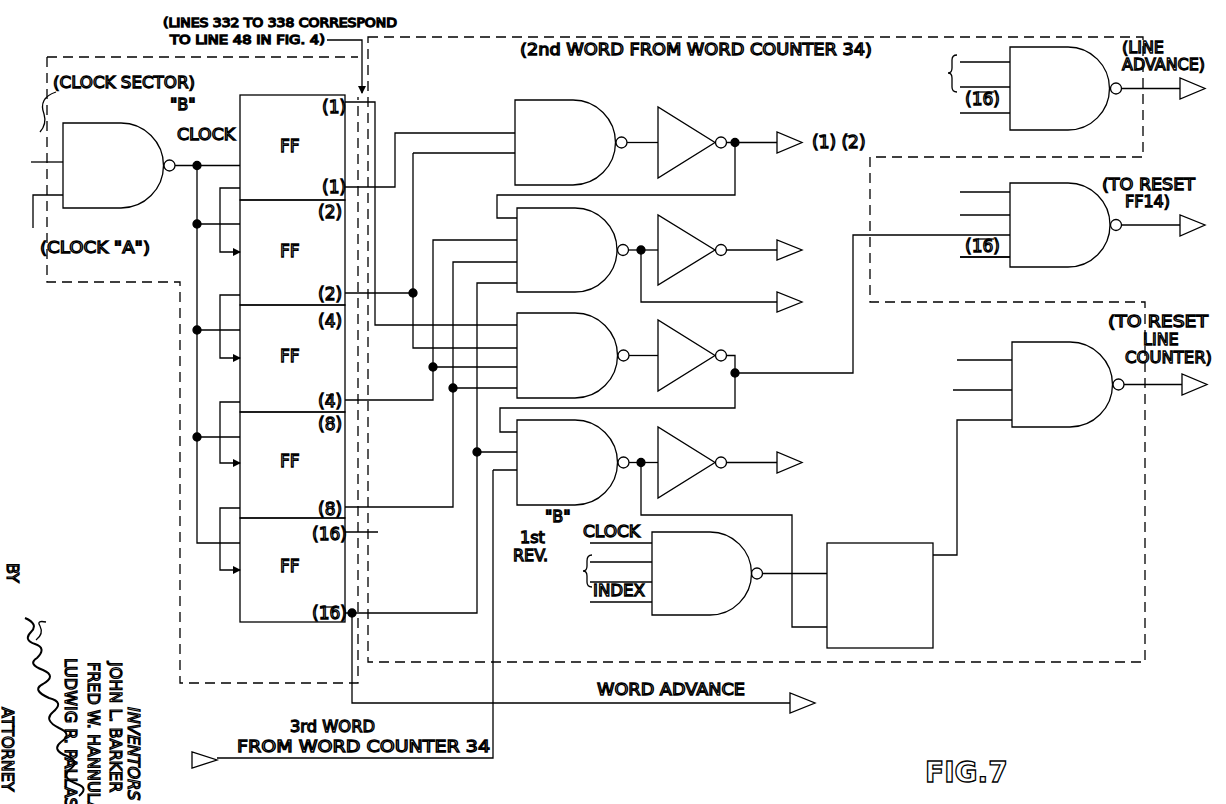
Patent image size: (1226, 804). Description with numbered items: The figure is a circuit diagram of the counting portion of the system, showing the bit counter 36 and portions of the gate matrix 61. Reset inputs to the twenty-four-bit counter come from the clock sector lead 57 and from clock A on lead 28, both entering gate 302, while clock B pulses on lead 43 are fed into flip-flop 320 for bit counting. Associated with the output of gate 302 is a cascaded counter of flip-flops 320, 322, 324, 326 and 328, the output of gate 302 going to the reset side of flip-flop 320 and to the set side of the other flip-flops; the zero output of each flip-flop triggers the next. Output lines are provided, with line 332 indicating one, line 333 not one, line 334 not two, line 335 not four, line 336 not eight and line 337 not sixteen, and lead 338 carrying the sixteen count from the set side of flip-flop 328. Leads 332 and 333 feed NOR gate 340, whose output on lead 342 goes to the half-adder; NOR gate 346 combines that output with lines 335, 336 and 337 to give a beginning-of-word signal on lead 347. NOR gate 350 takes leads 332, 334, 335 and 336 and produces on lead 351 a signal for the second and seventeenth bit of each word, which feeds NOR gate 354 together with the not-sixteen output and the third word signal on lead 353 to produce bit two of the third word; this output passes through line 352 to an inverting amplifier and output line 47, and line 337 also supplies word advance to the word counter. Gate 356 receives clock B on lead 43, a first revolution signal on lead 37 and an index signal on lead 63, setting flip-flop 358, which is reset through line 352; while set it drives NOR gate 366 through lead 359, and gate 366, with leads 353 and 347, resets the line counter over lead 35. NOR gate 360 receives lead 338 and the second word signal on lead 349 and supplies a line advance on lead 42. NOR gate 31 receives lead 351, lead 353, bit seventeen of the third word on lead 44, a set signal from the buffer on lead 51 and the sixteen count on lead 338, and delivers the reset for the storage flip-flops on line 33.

The bit counter 36 is at (162, 61).
The gate matrix 61 is at (455, 42).
The clock sector lead 57 is at (45, 151).
The clock A lead 28 is at (33, 226).
The gate 302 is at (100, 215).
The clock B lead 43 is at (200, 158).
The flip-flop 320 is at (239, 180).
The flip-flop 322 is at (239, 286).
The flip-flop 324 is at (239, 392).
The flip-flop 326 is at (239, 497).
The flip-flop 328 is at (239, 604).
The output line 332 is at (376, 100).
The output line 333 is at (383, 193).
The output line 334 is at (383, 300).
The output line 335 is at (386, 404).
The output line 336 is at (386, 511).
The output line 337 is at (379, 612).
The lead 338 is at (380, 536).
The NOR gate 340 is at (526, 104).
The lead 342 is at (750, 138).
The NOR gate 346 is at (604, 221).
The lead 347 is at (750, 246).
The NOR gate 350 is at (606, 324).
The lead 351 is at (750, 375).
The NOR gate 354 is at (612, 434).
The line 352 is at (636, 470).
The output line 47 is at (796, 462).
The third word lead 353 is at (493, 600).
The gate 356 is at (690, 616).
The lead 37 is at (585, 574).
The lead 63 is at (612, 603).
The flip-flop 358 is at (856, 544).
The lead 359 is at (957, 482).
The NOR gate 366 is at (1032, 340).
The lead 35 is at (1136, 388).
The lead 349 is at (872, 54).
The NOR gate 360 is at (1098, 131).
The lead 42 is at (1162, 92).
The lead 44 is at (954, 244).
The NOR gate 31 is at (1053, 170).
The lead 51 is at (960, 215).
The line 33 is at (1133, 228).